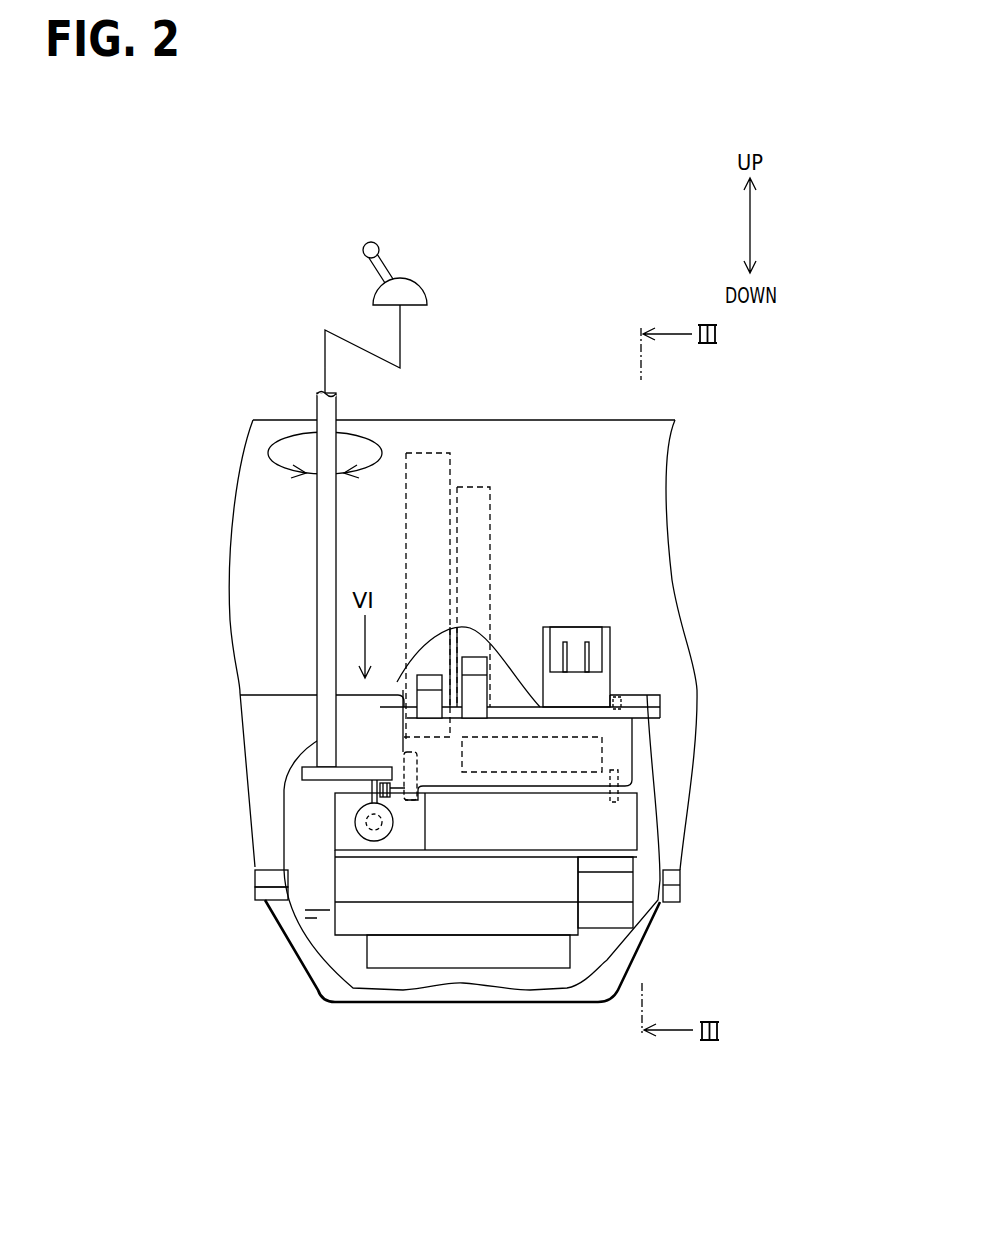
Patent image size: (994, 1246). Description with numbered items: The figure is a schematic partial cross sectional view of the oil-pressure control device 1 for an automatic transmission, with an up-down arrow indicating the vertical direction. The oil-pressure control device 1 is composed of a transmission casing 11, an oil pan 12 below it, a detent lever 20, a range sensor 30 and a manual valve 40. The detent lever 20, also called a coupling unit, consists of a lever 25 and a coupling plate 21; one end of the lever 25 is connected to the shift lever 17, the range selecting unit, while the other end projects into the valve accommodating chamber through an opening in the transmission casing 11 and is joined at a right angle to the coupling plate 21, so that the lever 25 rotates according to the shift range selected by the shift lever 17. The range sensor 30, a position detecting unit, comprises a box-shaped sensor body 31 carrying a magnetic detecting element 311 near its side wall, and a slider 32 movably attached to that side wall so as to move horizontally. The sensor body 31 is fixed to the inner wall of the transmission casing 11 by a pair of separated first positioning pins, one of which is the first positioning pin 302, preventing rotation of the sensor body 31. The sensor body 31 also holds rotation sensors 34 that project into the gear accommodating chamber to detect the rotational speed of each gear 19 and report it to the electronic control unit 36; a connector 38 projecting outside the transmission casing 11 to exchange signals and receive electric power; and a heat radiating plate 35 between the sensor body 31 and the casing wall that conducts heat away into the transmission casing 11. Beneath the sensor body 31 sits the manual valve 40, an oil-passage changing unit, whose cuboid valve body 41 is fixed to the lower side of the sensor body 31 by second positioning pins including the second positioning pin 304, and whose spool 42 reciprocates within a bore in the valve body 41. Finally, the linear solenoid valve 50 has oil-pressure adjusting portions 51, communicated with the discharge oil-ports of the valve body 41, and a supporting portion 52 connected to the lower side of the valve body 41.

The oil-pressure control device 1 is at (675, 410).
The transmission casing 11 is at (594, 447).
The oil pan 12 is at (310, 952).
The shift lever 17 is at (403, 277).
The gear 19 is at (425, 458).
The detent lever 20 is at (193, 728).
The coupling plate 21 is at (317, 773).
The lever 25 is at (322, 738).
The range sensor 30 is at (473, 1052).
The sensor body 31 is at (442, 768).
The slider 32 is at (403, 707).
The rotation sensor 34 is at (423, 700).
The heat radiating plate 35 is at (587, 715).
The electronic control unit 36 is at (518, 772).
The connector 38 is at (547, 682).
The manual valve 40 is at (337, 1052).
The valve body 41 is at (345, 835).
The spool 42 is at (375, 840).
The linear solenoid valve 50 is at (543, 1052).
The oil-pressure adjusting portion 51 is at (595, 923).
The supporting portion 52 is at (563, 922).
The first positioning pin 302 is at (650, 712).
The second positioning pin 304 is at (627, 787).
The magnetic detecting element 311 is at (403, 743).